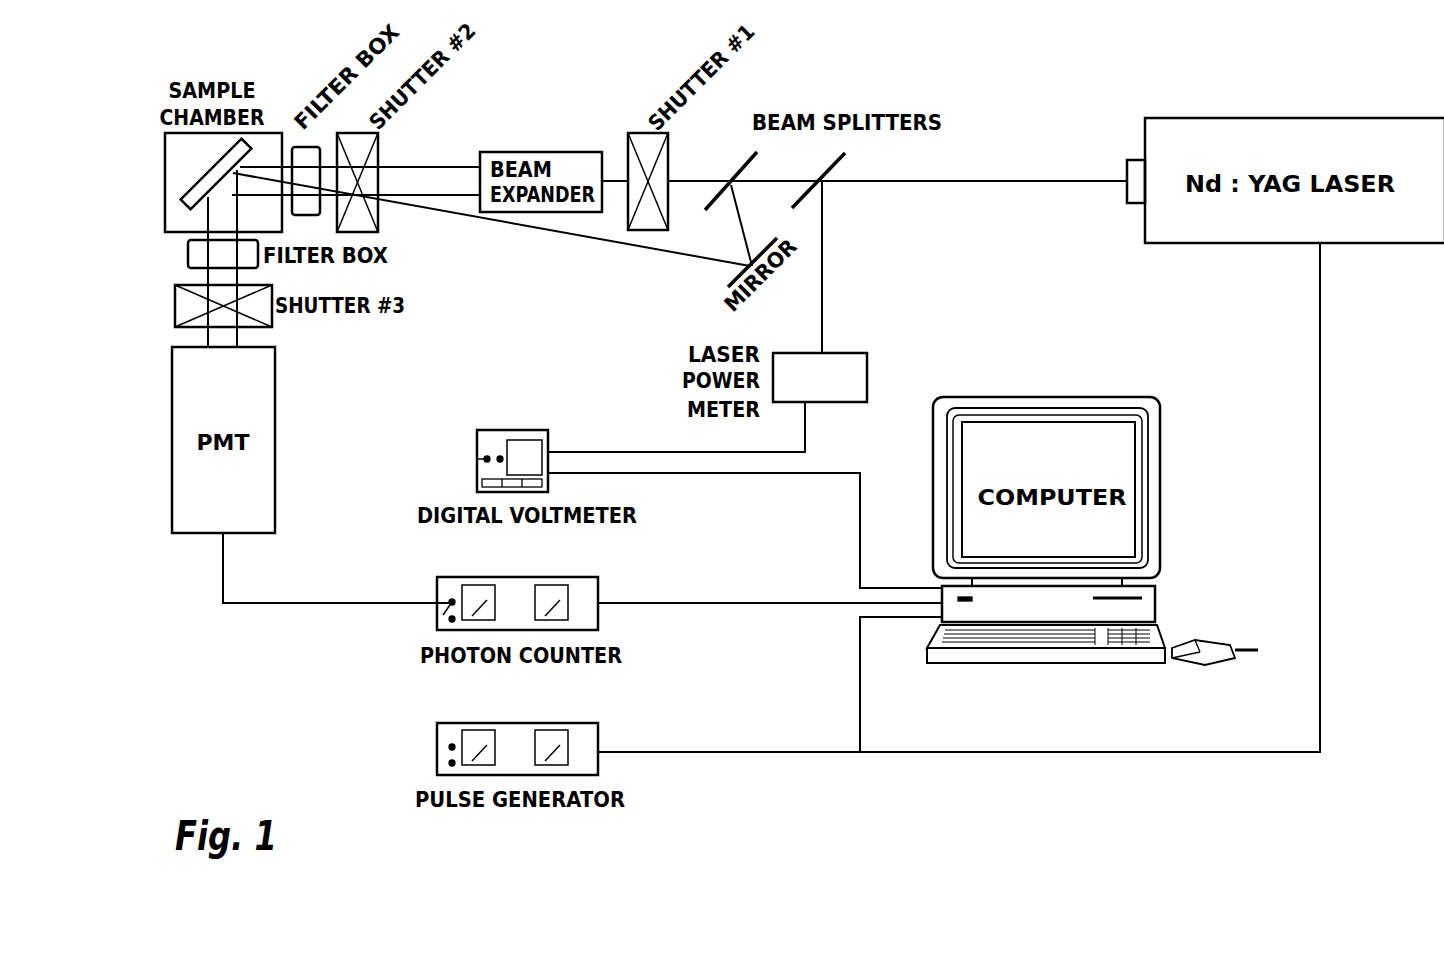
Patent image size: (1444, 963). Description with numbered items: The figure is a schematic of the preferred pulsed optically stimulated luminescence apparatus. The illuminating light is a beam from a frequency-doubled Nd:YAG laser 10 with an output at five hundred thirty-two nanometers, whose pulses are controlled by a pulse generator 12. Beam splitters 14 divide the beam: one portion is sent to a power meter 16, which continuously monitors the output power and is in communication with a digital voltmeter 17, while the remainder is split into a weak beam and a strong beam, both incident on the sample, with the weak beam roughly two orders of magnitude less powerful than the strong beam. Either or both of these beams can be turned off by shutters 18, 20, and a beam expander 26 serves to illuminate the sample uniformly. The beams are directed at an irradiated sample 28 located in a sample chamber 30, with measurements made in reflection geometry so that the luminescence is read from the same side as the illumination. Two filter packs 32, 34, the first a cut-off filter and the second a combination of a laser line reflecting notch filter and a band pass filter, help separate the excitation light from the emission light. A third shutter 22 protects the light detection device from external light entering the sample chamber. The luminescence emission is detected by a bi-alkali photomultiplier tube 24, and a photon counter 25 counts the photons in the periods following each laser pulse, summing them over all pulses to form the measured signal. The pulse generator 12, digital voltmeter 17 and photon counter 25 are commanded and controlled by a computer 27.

The Nd:YAG laser 10 is at (1185, 128).
The pulse generator 12 is at (447, 730).
The beam splitters 14 is at (748, 149).
The power meter 16 is at (843, 370).
The digital voltmeter 17 is at (487, 435).
The shutter #1 18 is at (648, 138).
The shutter #2 20 is at (376, 150).
The shutter #3 22 is at (260, 314).
The photomultiplier tube 24 is at (258, 462).
The photon counter 25 is at (448, 585).
The beam expander 26 is at (513, 152).
The computer 27 is at (1105, 401).
The irradiated sample 28 is at (200, 176).
The sample chamber 30 is at (178, 155).
The filter pack 32 is at (300, 152).
The filter pack 34 is at (193, 252).